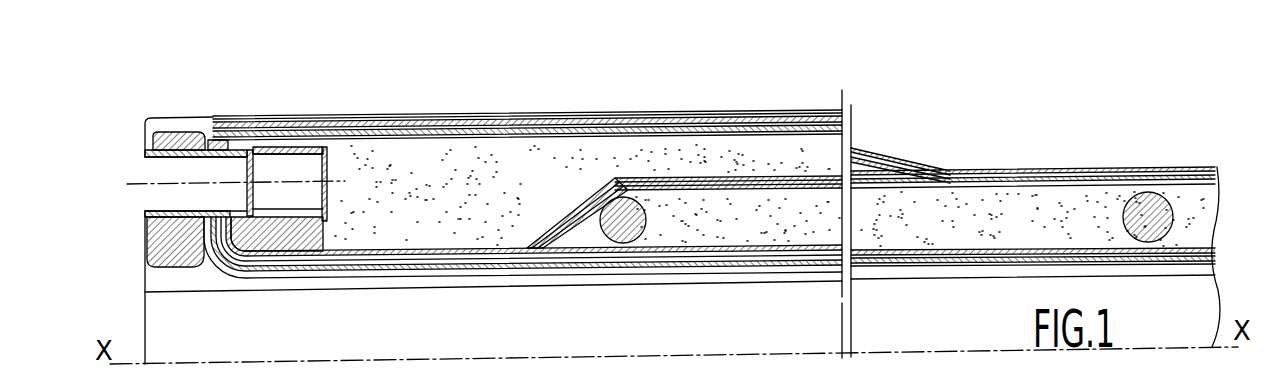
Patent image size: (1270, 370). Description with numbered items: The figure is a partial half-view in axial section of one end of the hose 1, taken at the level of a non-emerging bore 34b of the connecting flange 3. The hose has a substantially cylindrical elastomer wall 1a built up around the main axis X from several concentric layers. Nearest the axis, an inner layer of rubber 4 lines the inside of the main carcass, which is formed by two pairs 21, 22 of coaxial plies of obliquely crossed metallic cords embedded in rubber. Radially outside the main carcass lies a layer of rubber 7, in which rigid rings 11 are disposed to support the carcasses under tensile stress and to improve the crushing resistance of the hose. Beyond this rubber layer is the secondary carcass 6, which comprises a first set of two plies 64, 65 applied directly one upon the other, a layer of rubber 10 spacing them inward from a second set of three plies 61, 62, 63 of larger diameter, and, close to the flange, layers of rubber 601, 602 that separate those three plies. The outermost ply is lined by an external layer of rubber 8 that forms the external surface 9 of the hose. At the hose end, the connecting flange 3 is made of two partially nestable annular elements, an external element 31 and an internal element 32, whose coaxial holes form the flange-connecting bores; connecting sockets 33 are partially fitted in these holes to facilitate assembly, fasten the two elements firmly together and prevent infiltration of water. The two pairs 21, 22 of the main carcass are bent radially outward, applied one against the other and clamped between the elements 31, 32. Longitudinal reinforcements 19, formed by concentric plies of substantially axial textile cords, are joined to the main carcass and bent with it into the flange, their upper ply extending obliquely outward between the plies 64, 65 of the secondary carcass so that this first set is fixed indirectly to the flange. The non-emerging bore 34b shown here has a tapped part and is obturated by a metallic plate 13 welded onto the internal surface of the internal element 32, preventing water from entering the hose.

The hose 1 is at (545, 106).
The wall 1a is at (432, 187).
The connecting flange 3 is at (175, 128).
The inner layer of rubber 4 is at (515, 281).
The secondary carcass 6 is at (1112, 180).
The layer of rubber 7 is at (895, 232).
The external layer of rubber 8 is at (598, 142).
The external surface 9 is at (490, 145).
The layer of rubber 10 is at (687, 152).
The rigid rings 11 is at (620, 235).
The metallic plates 13 is at (337, 165).
The longitudinal reinforcements 19 is at (363, 262).
The pair of coaxial plies 21 is at (452, 275).
The pair of coaxial plies 22 is at (417, 265).
The external element 31 is at (190, 134).
The internal element 32 is at (268, 237).
The connecting sockets 33 is at (178, 245).
The non-emerging bore 34b is at (146, 177).
The ply 61 is at (833, 116).
The ply 62 is at (793, 116).
The ply 63 is at (775, 118).
The ply 64 is at (718, 192).
The ply 65 is at (782, 189).
The layer of rubber 601 is at (812, 113).
The layer of rubber 602 is at (737, 142).